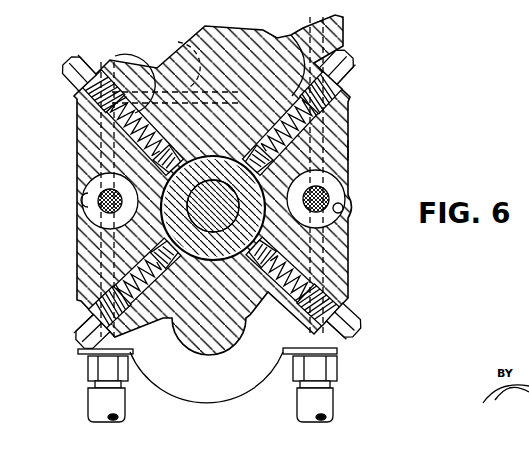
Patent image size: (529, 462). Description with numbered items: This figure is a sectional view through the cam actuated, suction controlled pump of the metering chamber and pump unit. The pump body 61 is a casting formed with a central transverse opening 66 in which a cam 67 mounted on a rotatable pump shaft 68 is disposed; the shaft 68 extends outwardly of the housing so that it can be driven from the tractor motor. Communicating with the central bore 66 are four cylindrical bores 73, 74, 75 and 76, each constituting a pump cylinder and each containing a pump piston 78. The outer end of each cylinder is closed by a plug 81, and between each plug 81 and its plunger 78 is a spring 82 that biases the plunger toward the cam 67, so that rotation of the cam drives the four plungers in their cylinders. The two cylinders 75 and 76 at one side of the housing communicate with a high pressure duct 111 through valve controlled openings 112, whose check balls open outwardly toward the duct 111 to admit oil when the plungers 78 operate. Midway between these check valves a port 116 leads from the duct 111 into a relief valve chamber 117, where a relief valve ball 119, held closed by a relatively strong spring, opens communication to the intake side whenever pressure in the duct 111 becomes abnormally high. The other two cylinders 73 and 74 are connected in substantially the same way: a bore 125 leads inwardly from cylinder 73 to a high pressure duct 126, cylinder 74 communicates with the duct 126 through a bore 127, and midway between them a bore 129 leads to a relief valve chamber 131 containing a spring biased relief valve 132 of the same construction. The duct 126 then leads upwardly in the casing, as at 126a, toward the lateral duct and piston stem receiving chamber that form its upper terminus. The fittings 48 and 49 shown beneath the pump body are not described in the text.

The pump body 61 is at (73, 148).
The plug 81 is at (72, 68).
The bore 125 is at (109, 63).
The bore 127 is at (79, 301).
The valve controlled openings 112 is at (351, 100).
The pump cylinder 73 is at (151, 78).
The spring 82 is at (113, 117).
The pump cylinder 74 is at (79, 280).
The pump cylinder 76 is at (337, 284).
The high pressure duct 111 is at (344, 130).
The pump piston 78 is at (231, 163).
The pump shaft 68 is at (340, 244).
The central transverse opening 66 is at (322, 227).
The high pressure duct 126 is at (79, 170).
The upward portion of high pressure duct 126a is at (179, 51).
The bore 129 is at (78, 215).
The relief valve chamber 131 is at (84, 196).
The relief valve 132 is at (93, 210).
The port 116 is at (353, 167).
The relief valve ball 119 is at (327, 193).
The relief valve chamber 117 is at (344, 208).
The cam 67 is at (346, 150).
The pump cylinder 75 is at (291, 39).
The left fitting 48 is at (97, 395).
The right fitting 49 is at (320, 398).